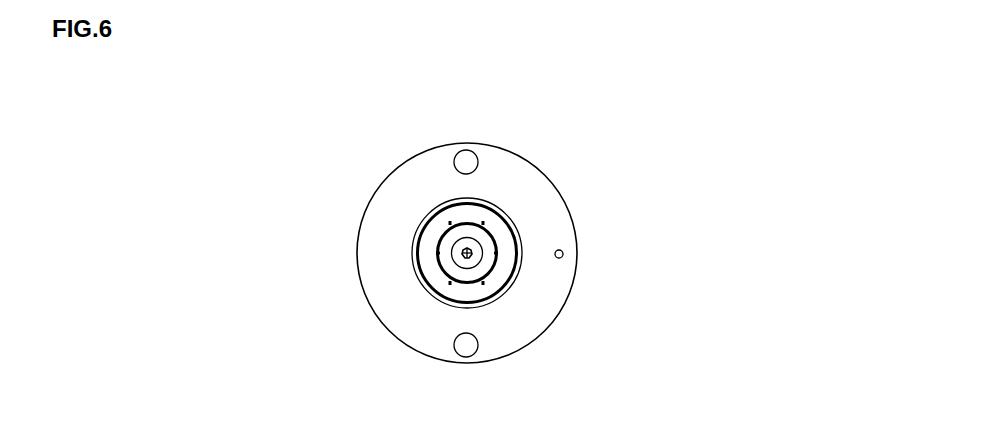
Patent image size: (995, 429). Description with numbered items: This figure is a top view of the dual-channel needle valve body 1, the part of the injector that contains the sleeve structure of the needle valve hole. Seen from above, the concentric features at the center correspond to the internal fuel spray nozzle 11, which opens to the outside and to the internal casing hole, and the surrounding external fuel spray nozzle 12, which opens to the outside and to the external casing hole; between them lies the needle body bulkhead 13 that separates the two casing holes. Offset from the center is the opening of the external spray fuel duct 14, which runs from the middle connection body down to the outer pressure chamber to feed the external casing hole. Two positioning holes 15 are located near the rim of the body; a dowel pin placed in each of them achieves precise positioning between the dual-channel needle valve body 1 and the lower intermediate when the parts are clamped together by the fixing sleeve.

The dual-channel needle valve body 1 is at (503, 167).
The internal fuel spray nozzle 11 is at (471, 257).
The external fuel spray nozzle 12 is at (452, 224).
The needle body bulkhead 13 is at (486, 256).
The external spray fuel duct 14 is at (563, 252).
The positioning hole 15 is at (465, 341).